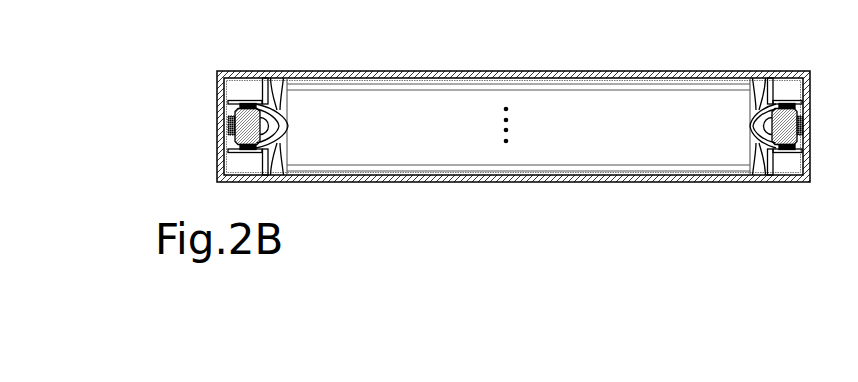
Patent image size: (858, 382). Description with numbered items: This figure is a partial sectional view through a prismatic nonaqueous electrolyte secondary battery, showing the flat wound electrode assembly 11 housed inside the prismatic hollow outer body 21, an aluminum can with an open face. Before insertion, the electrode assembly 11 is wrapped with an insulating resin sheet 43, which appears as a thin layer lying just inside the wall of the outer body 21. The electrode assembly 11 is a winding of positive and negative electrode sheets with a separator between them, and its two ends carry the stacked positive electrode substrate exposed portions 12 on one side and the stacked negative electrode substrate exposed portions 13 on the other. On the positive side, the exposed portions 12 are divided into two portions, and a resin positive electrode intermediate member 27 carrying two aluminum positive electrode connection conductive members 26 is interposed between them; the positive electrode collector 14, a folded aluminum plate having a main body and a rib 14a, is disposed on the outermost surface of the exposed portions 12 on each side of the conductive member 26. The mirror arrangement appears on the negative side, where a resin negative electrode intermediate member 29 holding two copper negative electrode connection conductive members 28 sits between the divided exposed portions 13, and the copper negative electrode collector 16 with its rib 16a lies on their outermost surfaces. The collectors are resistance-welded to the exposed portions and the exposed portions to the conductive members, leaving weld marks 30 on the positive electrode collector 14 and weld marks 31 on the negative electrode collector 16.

The flat wound electrode assembly 11 is at (606, 90).
The positive electrode substrate exposed portions 12 is at (738, 78).
The negative electrode substrate exposed portions 13 is at (291, 79).
The positive electrode collector 14 is at (795, 99).
The rib 14a is at (768, 95).
The negative electrode collector 16 is at (235, 102).
The rib 16a is at (268, 104).
The prismatic hollow outer body 21 is at (400, 72).
The positive electrode connection conductive member 26 is at (788, 117).
The positive electrode intermediate member 27 is at (804, 126).
The negative electrode connection conductive member 28 is at (236, 110).
The negative electrode intermediate member 29 is at (229, 126).
The weld marks 30 is at (788, 102).
The weld marks 31 is at (248, 103).
The resin sheet 43 is at (452, 78).